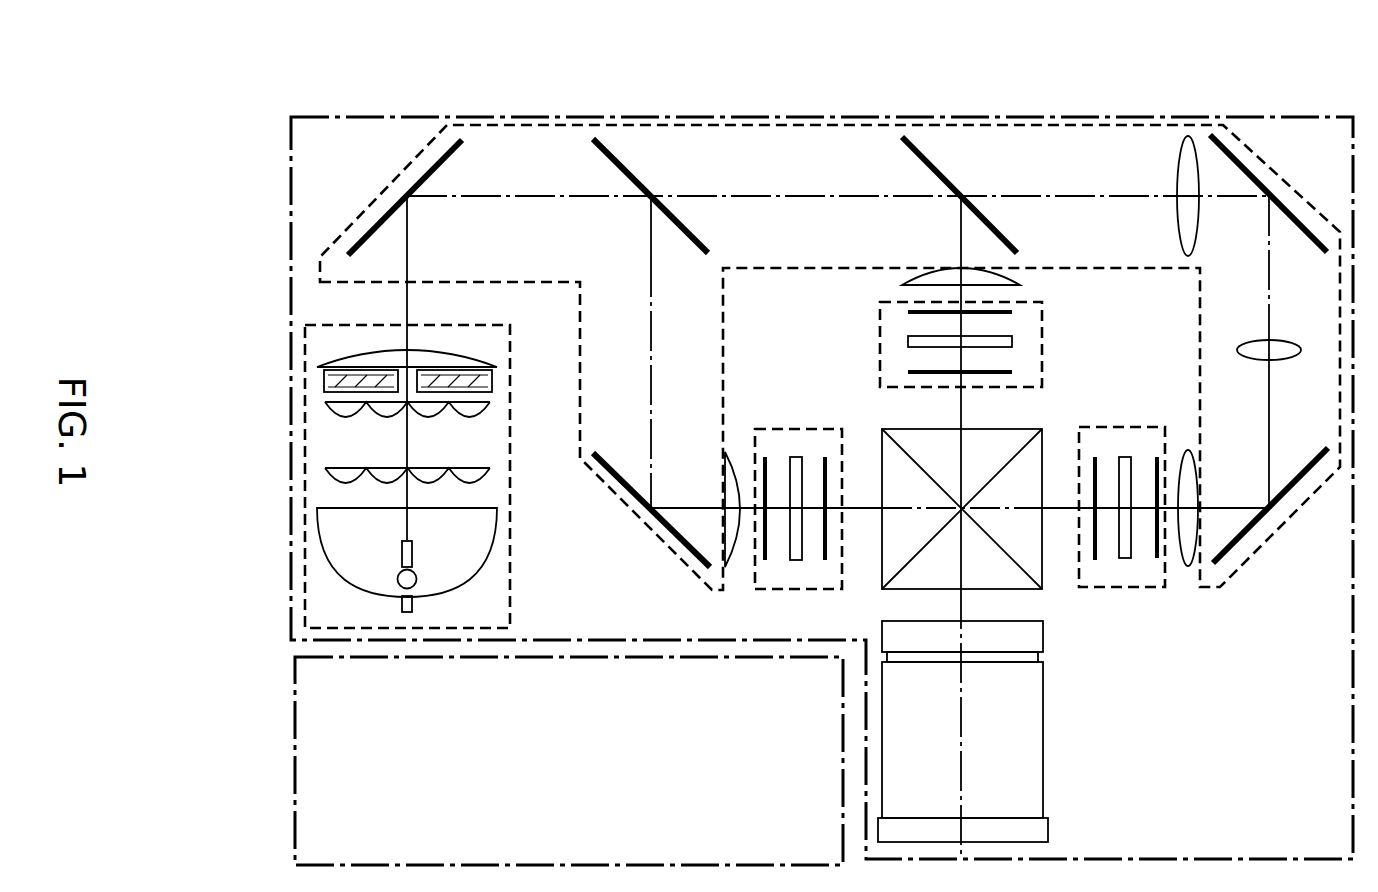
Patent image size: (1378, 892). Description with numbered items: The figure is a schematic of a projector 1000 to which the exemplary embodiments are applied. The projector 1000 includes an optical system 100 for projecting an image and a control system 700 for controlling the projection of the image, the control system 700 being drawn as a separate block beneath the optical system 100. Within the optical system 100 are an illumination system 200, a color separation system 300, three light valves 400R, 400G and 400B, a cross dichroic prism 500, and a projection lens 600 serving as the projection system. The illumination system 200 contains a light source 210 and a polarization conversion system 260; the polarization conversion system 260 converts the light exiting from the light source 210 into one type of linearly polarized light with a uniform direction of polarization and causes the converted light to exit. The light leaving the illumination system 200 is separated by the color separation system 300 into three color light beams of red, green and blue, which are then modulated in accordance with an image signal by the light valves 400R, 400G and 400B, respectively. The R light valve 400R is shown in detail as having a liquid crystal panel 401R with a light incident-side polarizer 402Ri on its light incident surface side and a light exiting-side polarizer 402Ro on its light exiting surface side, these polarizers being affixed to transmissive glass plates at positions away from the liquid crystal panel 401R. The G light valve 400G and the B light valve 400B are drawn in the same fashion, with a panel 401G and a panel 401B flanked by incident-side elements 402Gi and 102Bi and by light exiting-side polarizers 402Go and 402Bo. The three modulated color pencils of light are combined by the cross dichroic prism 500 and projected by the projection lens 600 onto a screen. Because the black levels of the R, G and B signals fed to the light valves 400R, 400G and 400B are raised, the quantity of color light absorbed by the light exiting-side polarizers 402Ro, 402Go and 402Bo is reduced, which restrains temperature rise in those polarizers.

The projector 1000 is at (261, 60).
The optical system 100 is at (289, 190).
The illumination system 200 is at (513, 595).
The light source 210 is at (473, 557).
The polarization conversion system 260 is at (499, 379).
The color separation system 300 is at (405, 167).
The R light valve 400R is at (767, 590).
The liquid crystal panel 401R is at (796, 456).
The light incident-side polarizer 402Ri is at (766, 455).
The light exiting-side polarizer 402Ro is at (827, 458).
The G light valve 400G is at (1043, 336).
The liquid crystal panel 401G is at (906, 341).
The green incident-side polarizing plate 402Gi is at (906, 312).
The light exiting-side polarizer 402Go is at (906, 372).
The B light valve 400B is at (1131, 426).
The blue liquid crystal light valve 401B is at (1125, 560).
The light exiting-side polarizer 402Bo is at (1095, 561).
The blue incident-side polarizing plate 102Bi is at (1157, 559).
The cross dichroic prism 500 is at (977, 590).
The projection lens 600 is at (1043, 740).
The control system 700 is at (294, 785).